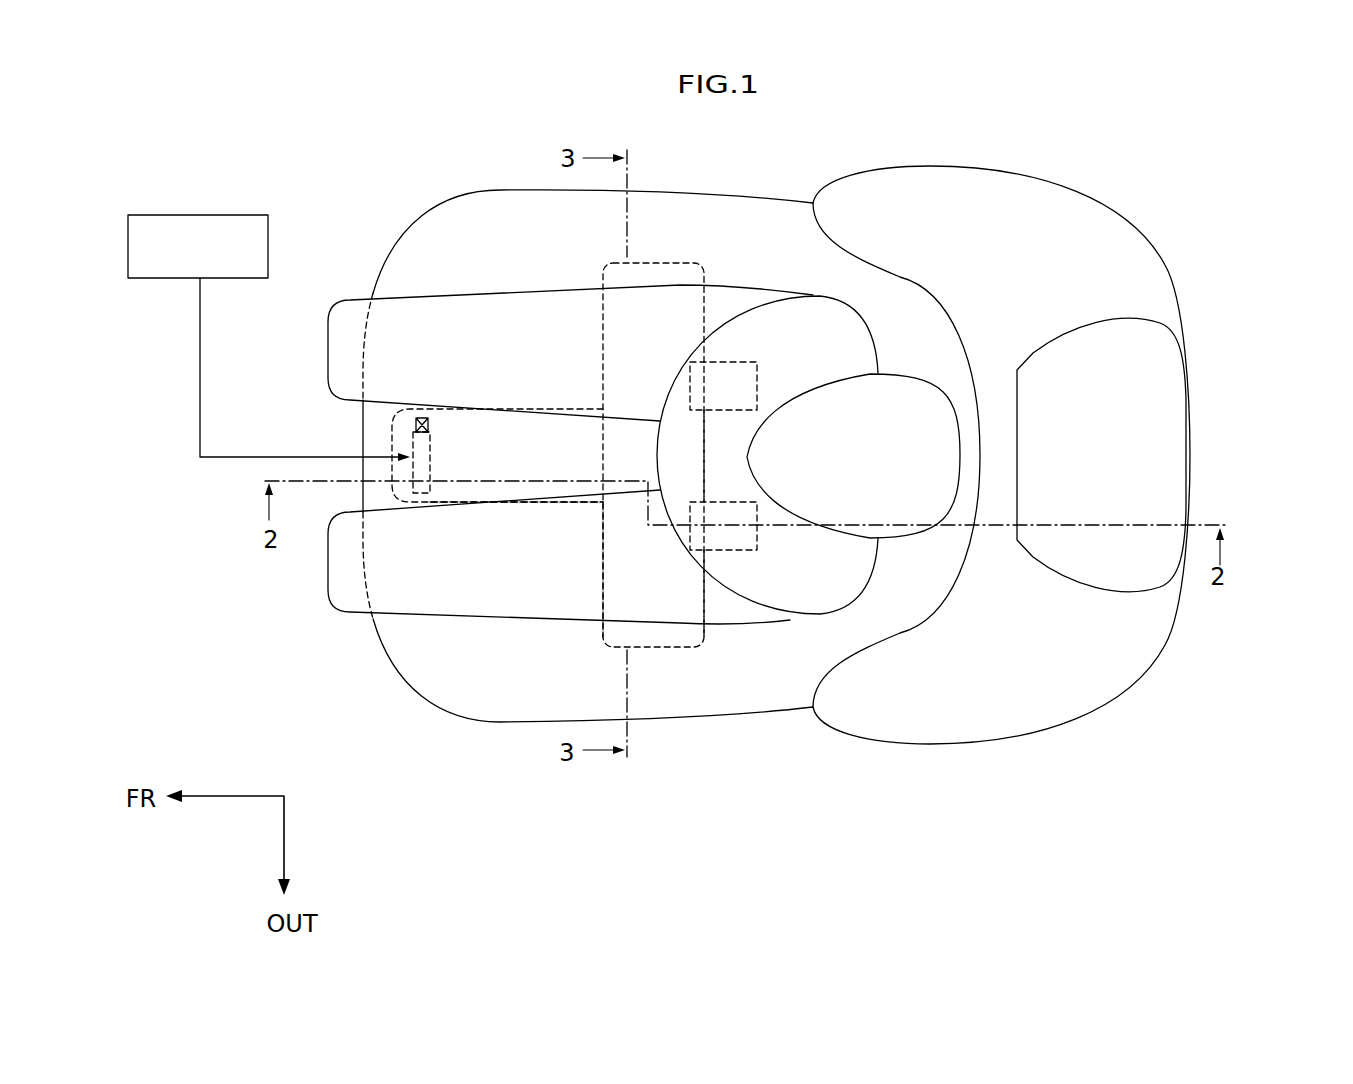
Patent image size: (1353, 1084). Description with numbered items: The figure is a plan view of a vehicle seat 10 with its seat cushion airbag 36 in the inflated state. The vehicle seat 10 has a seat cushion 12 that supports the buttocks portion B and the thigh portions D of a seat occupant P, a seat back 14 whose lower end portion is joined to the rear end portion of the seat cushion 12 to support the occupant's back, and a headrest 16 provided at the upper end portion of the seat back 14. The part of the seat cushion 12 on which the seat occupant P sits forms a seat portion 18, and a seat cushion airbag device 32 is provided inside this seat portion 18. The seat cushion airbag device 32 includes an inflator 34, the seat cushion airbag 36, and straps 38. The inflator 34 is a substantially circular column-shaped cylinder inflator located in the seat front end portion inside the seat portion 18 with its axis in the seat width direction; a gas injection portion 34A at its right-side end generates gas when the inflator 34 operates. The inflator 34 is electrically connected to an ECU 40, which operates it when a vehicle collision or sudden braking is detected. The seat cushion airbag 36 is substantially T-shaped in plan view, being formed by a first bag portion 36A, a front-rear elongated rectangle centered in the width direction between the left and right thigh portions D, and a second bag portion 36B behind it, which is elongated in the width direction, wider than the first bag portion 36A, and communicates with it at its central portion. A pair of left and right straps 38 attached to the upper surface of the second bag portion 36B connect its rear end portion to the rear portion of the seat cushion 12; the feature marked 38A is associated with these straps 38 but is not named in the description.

The vehicle seat 10 is at (1076, 765).
The seat cushion 12 is at (731, 719).
The seat back 14 is at (1131, 694).
The headrest 16 is at (1194, 455).
The seat portion 18 is at (521, 240).
The seat cushion airbag device 32 is at (511, 365).
The inflator 34 is at (423, 503).
The gas injection portion 34A is at (413, 427).
The seat cushion airbag 36 is at (460, 398).
The first bag portion 36A is at (489, 496).
The second bag portion 36B is at (613, 563).
The straps 38 is at (719, 345).
The sensor detection portion 38A is at (687, 357).
The ECU 40 is at (191, 215).
The seat occupant P is at (759, 284).
The thigh portion D is at (573, 284).
The buttocks portion B is at (766, 621).